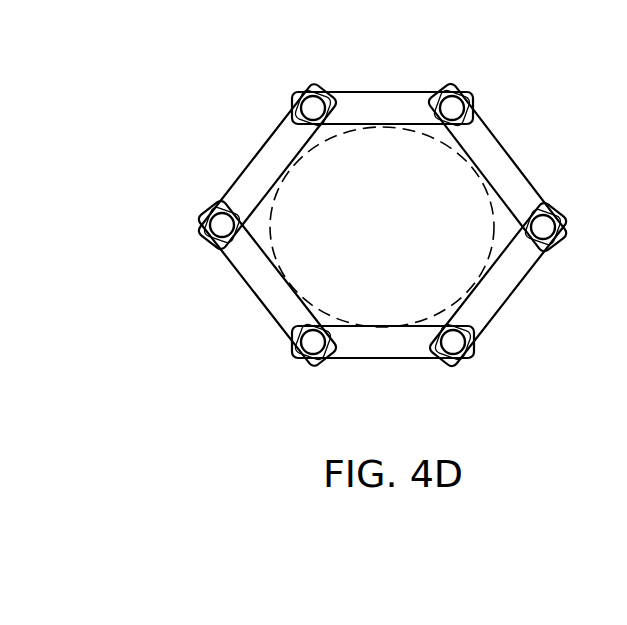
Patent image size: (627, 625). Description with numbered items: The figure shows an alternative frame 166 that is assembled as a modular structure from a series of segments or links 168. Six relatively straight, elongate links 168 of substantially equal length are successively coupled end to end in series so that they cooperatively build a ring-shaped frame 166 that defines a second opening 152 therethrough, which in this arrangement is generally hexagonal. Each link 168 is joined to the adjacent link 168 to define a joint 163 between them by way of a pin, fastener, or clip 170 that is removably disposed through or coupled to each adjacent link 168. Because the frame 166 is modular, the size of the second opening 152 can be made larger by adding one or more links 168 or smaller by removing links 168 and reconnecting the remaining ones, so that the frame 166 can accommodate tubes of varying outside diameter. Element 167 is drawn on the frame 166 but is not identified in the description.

The second opening 152 is at (272, 228).
The joint 163 is at (203, 205).
The frame 166 is at (265, 103).
The second strut 167 is at (258, 317).
The link 168 is at (379, 229).
The clip 170 is at (358, 246).